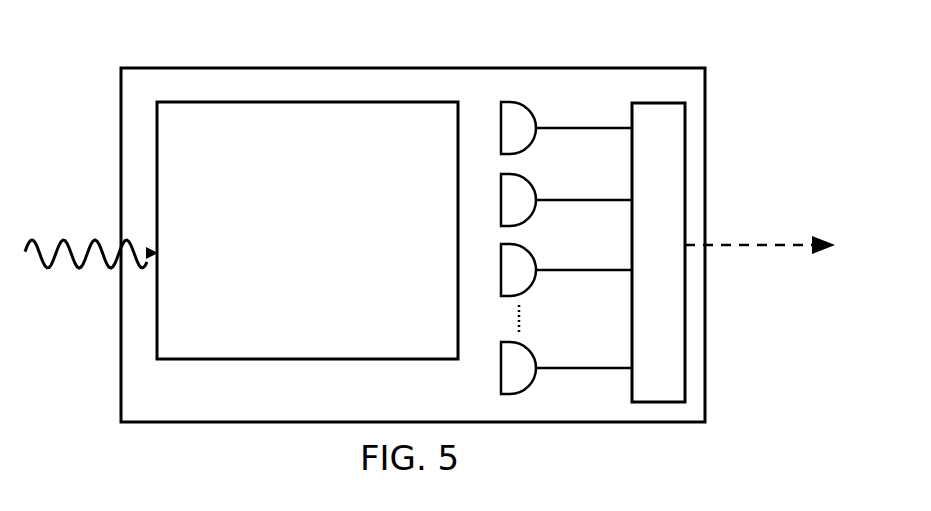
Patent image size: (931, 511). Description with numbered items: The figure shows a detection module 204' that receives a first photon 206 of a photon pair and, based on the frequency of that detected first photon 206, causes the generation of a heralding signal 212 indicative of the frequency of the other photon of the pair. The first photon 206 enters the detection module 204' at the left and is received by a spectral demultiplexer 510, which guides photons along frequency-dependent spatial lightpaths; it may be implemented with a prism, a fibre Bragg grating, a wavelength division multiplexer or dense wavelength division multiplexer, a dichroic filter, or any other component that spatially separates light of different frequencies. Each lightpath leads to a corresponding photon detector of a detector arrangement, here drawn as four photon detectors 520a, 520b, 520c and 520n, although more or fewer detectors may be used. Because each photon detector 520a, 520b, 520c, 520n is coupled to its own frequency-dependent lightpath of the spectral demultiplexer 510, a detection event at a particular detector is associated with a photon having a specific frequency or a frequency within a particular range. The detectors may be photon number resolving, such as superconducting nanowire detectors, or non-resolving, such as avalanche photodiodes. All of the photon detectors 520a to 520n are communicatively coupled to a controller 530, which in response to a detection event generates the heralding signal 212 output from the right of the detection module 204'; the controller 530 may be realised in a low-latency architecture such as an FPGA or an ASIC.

The detection module 204' is at (413, 214).
The spectral demultiplexer 510 is at (287, 243).
The controller 530 is at (679, 171).
The photon detector 520a is at (532, 104).
The photon detector 520b is at (532, 176).
The photon detector 520c is at (532, 246).
The photon detector 520n is at (532, 344).
The first photon 206 is at (91, 235).
The heralding signal 212 is at (747, 248).